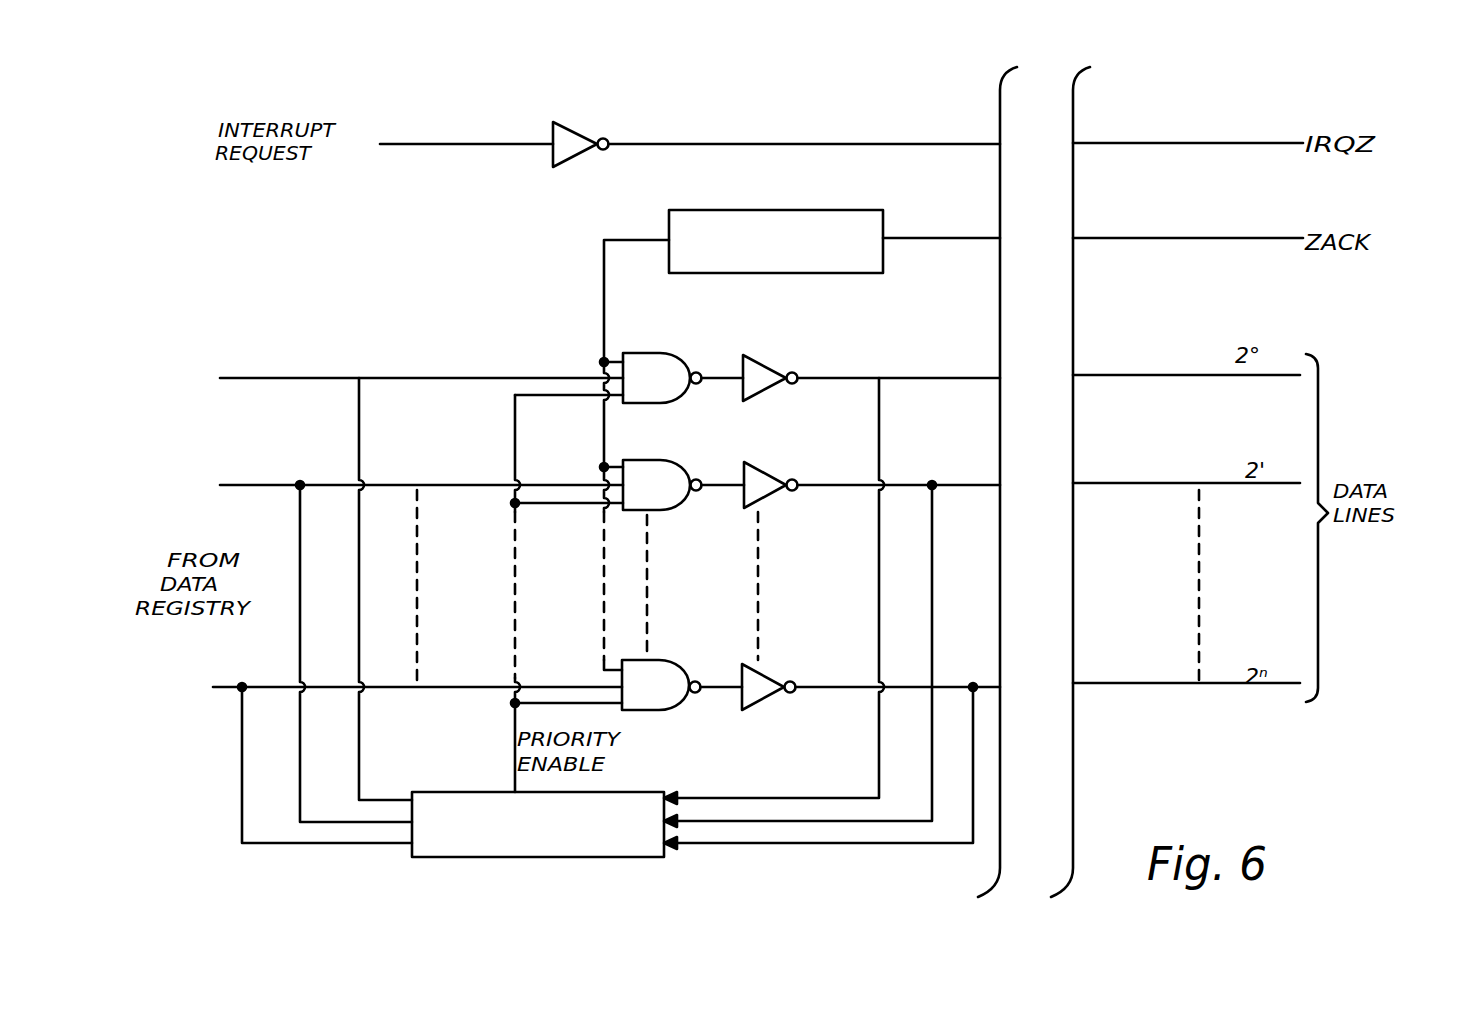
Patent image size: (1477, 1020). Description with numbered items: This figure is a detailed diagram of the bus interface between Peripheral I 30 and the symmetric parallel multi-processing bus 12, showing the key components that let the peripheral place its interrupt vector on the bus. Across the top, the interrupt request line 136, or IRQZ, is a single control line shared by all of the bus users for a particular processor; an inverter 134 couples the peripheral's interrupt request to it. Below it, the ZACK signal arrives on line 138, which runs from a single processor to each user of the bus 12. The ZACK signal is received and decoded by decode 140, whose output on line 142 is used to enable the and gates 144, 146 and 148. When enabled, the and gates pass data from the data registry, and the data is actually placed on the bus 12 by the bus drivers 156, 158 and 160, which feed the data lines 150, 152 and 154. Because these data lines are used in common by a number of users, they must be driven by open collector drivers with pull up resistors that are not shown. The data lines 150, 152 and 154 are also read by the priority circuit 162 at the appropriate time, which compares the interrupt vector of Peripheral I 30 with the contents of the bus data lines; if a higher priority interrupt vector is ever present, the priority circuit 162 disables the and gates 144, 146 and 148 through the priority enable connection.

The symmetric parallel multi-processing bus 12 is at (1382, 90).
The Peripheral I 30 is at (790, 96).
The inverter 134 is at (574, 162).
The interrupt request line 136 is at (877, 144).
The ZACK line 138 is at (908, 238).
The decode 140 is at (707, 211).
The decode output line 142 is at (604, 284).
The and gate 144 is at (632, 353).
The and gate 146 is at (632, 460).
The and gate 148 is at (633, 658).
The data line 150 is at (892, 378).
The data line 152 is at (898, 485).
The data line 154 is at (800, 687).
The bus driver 156 is at (757, 362).
The bus driver 158 is at (752, 470).
The bus driver 160 is at (760, 663).
The priority circuit 162 is at (533, 858).